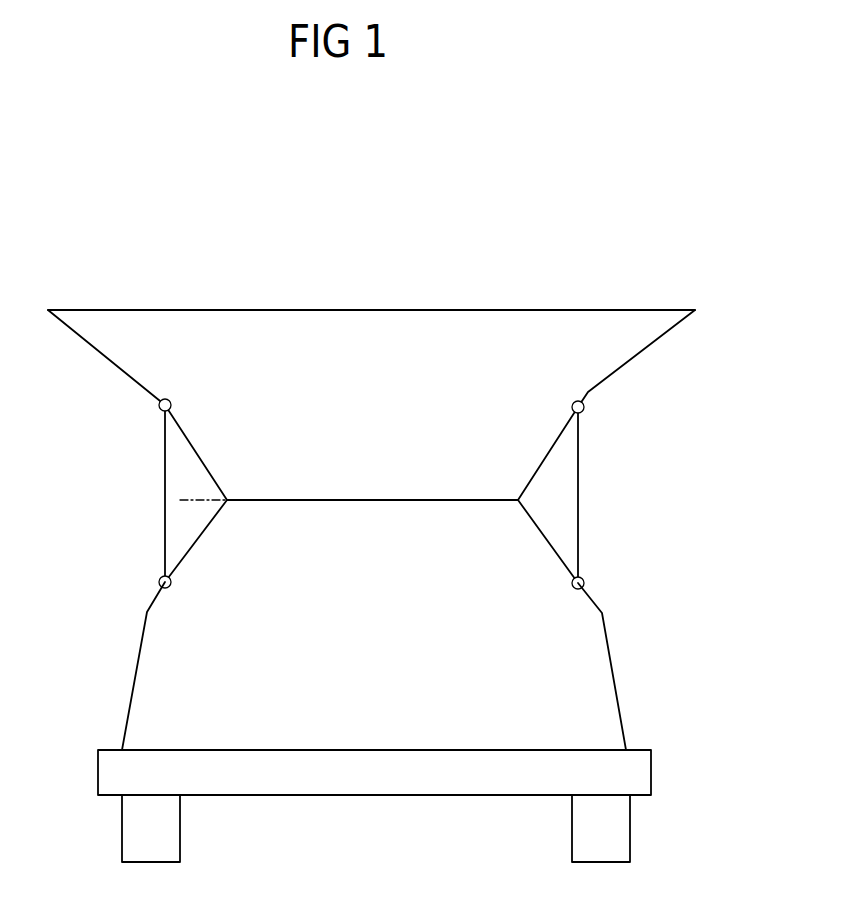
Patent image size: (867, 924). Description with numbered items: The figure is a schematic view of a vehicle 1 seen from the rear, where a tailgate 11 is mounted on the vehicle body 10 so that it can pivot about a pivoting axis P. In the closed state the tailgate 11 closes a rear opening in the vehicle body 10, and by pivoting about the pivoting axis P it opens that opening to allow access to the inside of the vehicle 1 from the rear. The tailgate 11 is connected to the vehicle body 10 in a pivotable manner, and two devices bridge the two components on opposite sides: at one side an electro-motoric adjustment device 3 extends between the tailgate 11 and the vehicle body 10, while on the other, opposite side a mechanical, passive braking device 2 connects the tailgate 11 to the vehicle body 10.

The vehicle 1 is at (637, 400).
The mechanical, passive braking device 2 is at (138, 520).
The electro-motoric adjustment device 3 is at (608, 517).
The vehicle body 10 is at (610, 690).
The tailgate 11 is at (402, 310).
The pivoting axis P is at (192, 498).